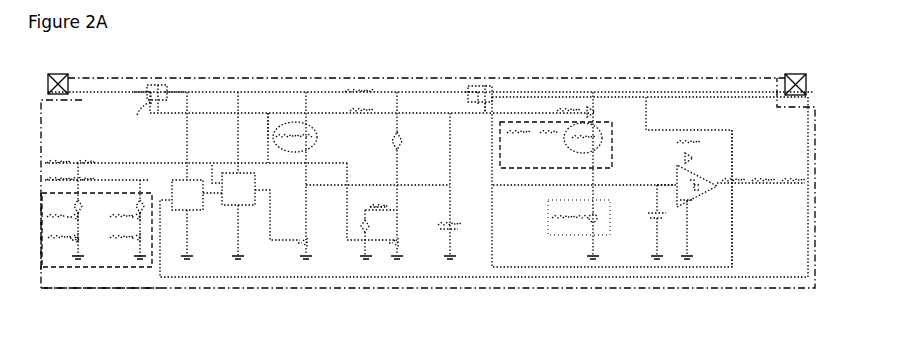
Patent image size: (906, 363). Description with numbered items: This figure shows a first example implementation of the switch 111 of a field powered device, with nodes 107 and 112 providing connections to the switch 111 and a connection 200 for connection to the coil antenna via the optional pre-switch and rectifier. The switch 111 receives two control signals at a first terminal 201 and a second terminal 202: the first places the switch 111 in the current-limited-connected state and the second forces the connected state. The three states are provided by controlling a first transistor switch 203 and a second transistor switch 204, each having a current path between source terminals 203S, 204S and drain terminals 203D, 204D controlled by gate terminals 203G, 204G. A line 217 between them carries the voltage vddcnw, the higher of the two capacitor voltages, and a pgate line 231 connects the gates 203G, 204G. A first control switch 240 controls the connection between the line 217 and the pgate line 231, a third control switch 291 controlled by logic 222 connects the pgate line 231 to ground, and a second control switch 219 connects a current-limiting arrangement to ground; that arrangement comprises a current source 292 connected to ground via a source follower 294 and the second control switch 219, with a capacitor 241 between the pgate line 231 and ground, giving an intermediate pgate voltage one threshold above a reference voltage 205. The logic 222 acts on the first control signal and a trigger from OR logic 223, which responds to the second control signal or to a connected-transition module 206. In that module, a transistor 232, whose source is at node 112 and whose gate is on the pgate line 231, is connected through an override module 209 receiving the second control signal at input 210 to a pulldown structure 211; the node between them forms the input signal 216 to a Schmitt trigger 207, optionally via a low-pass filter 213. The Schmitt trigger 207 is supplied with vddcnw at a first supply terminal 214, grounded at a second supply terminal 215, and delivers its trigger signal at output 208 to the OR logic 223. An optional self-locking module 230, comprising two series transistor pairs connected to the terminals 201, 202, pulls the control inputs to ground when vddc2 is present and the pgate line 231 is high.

The connection 200 is at (87, 93).
The node 112 is at (790, 75).
The first terminal 201 is at (43, 162).
The node 107 is at (70, 94).
The switch 111 is at (107, 289).
The second terminal 202 is at (45, 262).
The self-locking module 230 is at (83, 270).
The first transistor switch 203 is at (158, 84).
The source terminal 203S is at (134, 92).
The drain terminal 203D is at (182, 92).
The gate terminal 203G is at (148, 103).
The pgate line 231 is at (276, 118).
The first control switch 240 is at (296, 124).
The line 217 is at (347, 93).
The current source 292 is at (400, 138).
The second transistor switch 204 is at (486, 83).
The gate terminal 204G is at (483, 100).
The drain terminal 204D is at (470, 92).
The source terminal 204S is at (493, 97).
The override module 209 is at (537, 161).
The input 210 is at (515, 133).
The transistor 232 is at (590, 115).
The pulldown structure 211 is at (582, 227).
The Schmitt trigger 207 is at (677, 167).
The first supply terminal 214 is at (688, 160).
The input terminal 216 is at (672, 183).
The low-pass filter 213 is at (655, 220).
The second supply terminal 215 is at (688, 243).
The output 208 is at (760, 185).
The connected-transition module 206 is at (732, 225).
The OR logic 223 is at (195, 203).
The logic 222 is at (247, 199).
The third control switch 291 is at (310, 243).
The reference voltage 205 is at (383, 212).
The second control switch 219 is at (403, 243).
The source follower 294 is at (395, 207).
The capacitor 241 is at (455, 224).